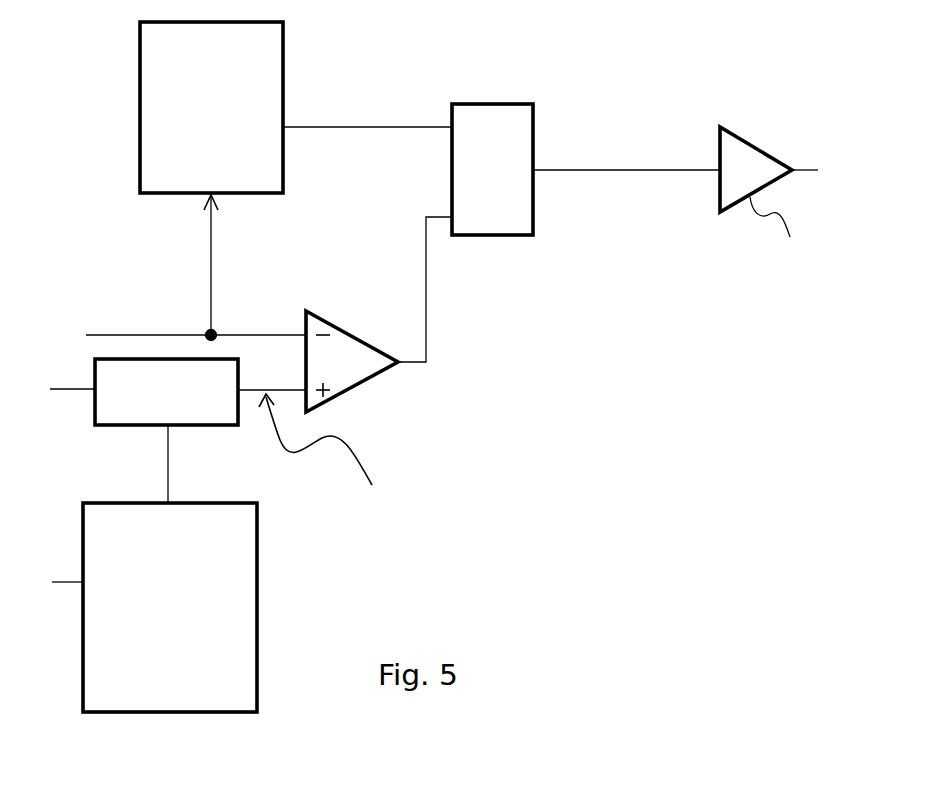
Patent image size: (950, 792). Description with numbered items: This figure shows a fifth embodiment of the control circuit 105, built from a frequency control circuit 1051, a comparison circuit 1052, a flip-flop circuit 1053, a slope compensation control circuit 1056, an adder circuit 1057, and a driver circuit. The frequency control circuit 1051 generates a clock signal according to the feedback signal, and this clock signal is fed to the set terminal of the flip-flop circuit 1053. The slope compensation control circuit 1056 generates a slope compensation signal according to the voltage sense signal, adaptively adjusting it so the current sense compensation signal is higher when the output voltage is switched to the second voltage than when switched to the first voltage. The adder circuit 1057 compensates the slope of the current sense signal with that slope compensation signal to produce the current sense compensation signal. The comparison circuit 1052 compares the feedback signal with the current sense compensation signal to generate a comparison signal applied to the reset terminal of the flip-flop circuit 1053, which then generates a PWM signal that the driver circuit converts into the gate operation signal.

The control circuit 105 is at (781, 58).
The frequency control circuit 1051 is at (195, 183).
The comparison circuit 1052 is at (353, 390).
The flip-flop circuit 1053 is at (500, 236).
The slope compensation control circuit 1056 is at (152, 700).
The adder circuit 1057 is at (205, 425).